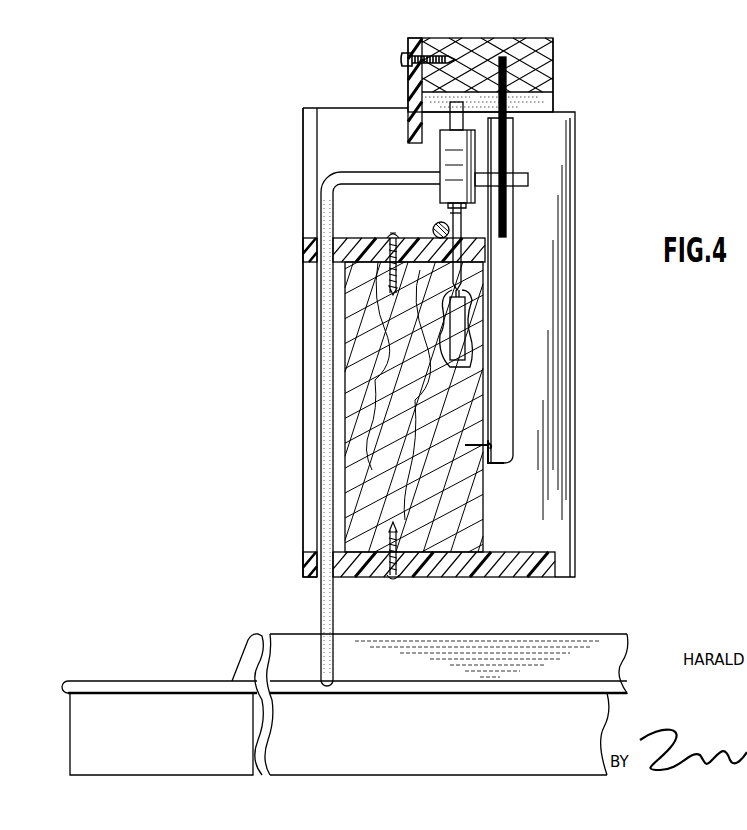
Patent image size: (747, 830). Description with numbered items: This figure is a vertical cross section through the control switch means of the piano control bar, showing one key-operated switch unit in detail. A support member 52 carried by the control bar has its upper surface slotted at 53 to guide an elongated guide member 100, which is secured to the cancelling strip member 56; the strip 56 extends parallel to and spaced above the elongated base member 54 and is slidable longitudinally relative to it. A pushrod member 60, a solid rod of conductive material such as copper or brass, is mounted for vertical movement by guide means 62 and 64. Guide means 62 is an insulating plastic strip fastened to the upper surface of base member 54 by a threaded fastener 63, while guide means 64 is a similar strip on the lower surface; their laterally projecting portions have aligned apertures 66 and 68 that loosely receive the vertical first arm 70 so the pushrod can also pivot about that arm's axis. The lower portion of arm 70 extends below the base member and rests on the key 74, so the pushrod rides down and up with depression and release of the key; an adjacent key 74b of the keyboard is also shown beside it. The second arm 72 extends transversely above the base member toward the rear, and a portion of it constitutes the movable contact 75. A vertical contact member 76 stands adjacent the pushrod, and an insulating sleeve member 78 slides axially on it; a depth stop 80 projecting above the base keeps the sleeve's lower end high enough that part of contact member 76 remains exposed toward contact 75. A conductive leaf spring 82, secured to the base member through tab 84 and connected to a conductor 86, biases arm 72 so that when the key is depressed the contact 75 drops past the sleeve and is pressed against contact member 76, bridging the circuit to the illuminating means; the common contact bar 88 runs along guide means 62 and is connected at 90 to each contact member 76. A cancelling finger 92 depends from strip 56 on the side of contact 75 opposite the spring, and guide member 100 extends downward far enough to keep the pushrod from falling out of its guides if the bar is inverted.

The support member 52 is at (337, 107).
The slot 53 is at (413, 140).
The elongated base member 54 is at (483, 520).
The cancelling strip member 56 is at (530, 38).
The pushrod member 60 is at (316, 340).
The guide means 62 is at (353, 239).
The threaded fastener 63 is at (390, 237).
The guide means 64 is at (303, 575).
The aperture 66 is at (303, 259).
The aperture 68 is at (303, 557).
The first arm 70 is at (317, 421).
The second arm 72 is at (358, 171).
The key 74 is at (157, 681).
The channel rail 74b is at (528, 634).
The movable contact 75 is at (478, 173).
The vertical contact member 76 is at (450, 212).
The protective sleeve member 78 is at (440, 165).
The depth stop 80 is at (462, 237).
The leaf spring 82 is at (513, 279).
The tab 84 is at (488, 467).
The conductor 86 is at (527, 484).
The common contact bar 88 is at (433, 229).
The electrical connection 90 is at (448, 214).
The finger 92 is at (507, 106).
The elongated guide member 100 is at (407, 79).